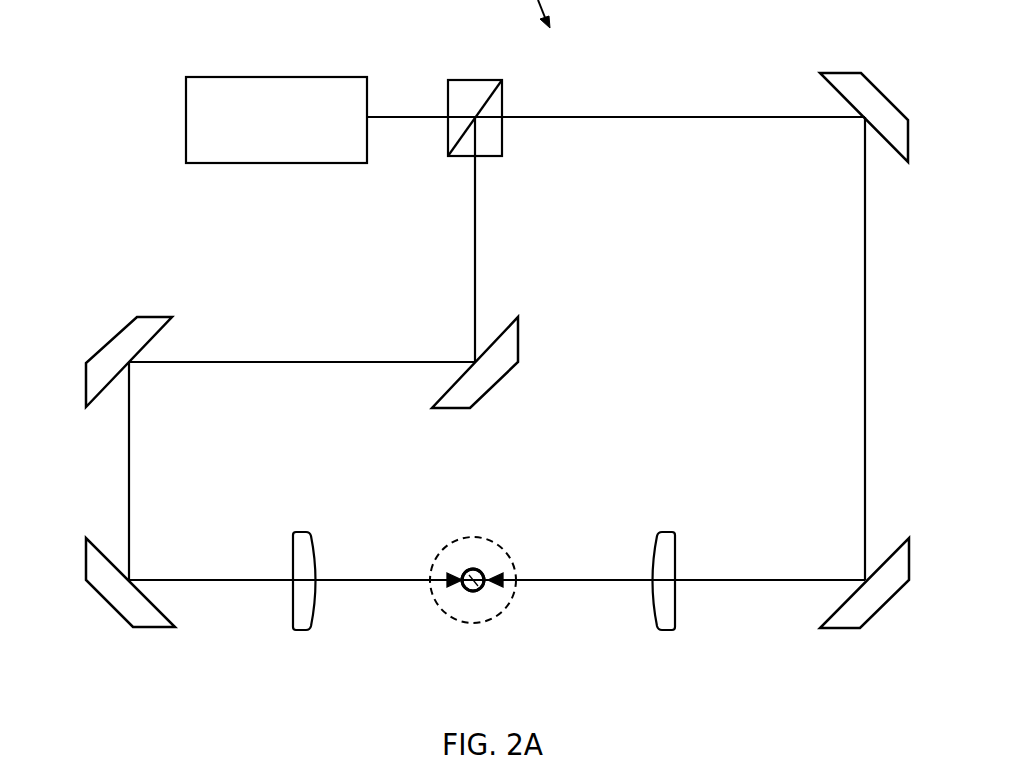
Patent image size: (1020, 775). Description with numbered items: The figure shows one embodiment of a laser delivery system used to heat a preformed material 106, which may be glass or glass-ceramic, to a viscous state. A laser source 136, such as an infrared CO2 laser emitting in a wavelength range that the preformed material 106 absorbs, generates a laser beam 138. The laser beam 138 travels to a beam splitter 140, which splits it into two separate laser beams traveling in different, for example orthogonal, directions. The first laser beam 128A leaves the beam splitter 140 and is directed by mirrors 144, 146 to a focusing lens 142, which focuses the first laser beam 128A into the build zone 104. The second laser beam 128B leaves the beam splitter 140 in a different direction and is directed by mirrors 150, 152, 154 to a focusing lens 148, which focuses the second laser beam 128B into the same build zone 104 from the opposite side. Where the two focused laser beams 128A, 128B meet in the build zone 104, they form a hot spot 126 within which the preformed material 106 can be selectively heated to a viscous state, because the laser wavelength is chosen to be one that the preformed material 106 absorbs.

The build zone 104 is at (462, 538).
The preformed material 106 is at (473, 587).
The hot spot 126 is at (478, 570).
The first laser beam 128A is at (648, 117).
The second laser beam 128B is at (476, 252).
The laser source 136 is at (278, 76).
The laser beam 138 is at (413, 115).
The beam splitter 140 is at (477, 80).
The focusing lens 142 is at (663, 532).
The mirror 144 is at (870, 83).
The mirror 146 is at (883, 603).
The focusing lens 148 is at (297, 630).
The mirror 150 is at (500, 378).
The mirror 152 is at (85, 380).
The mirror 154 is at (155, 628).